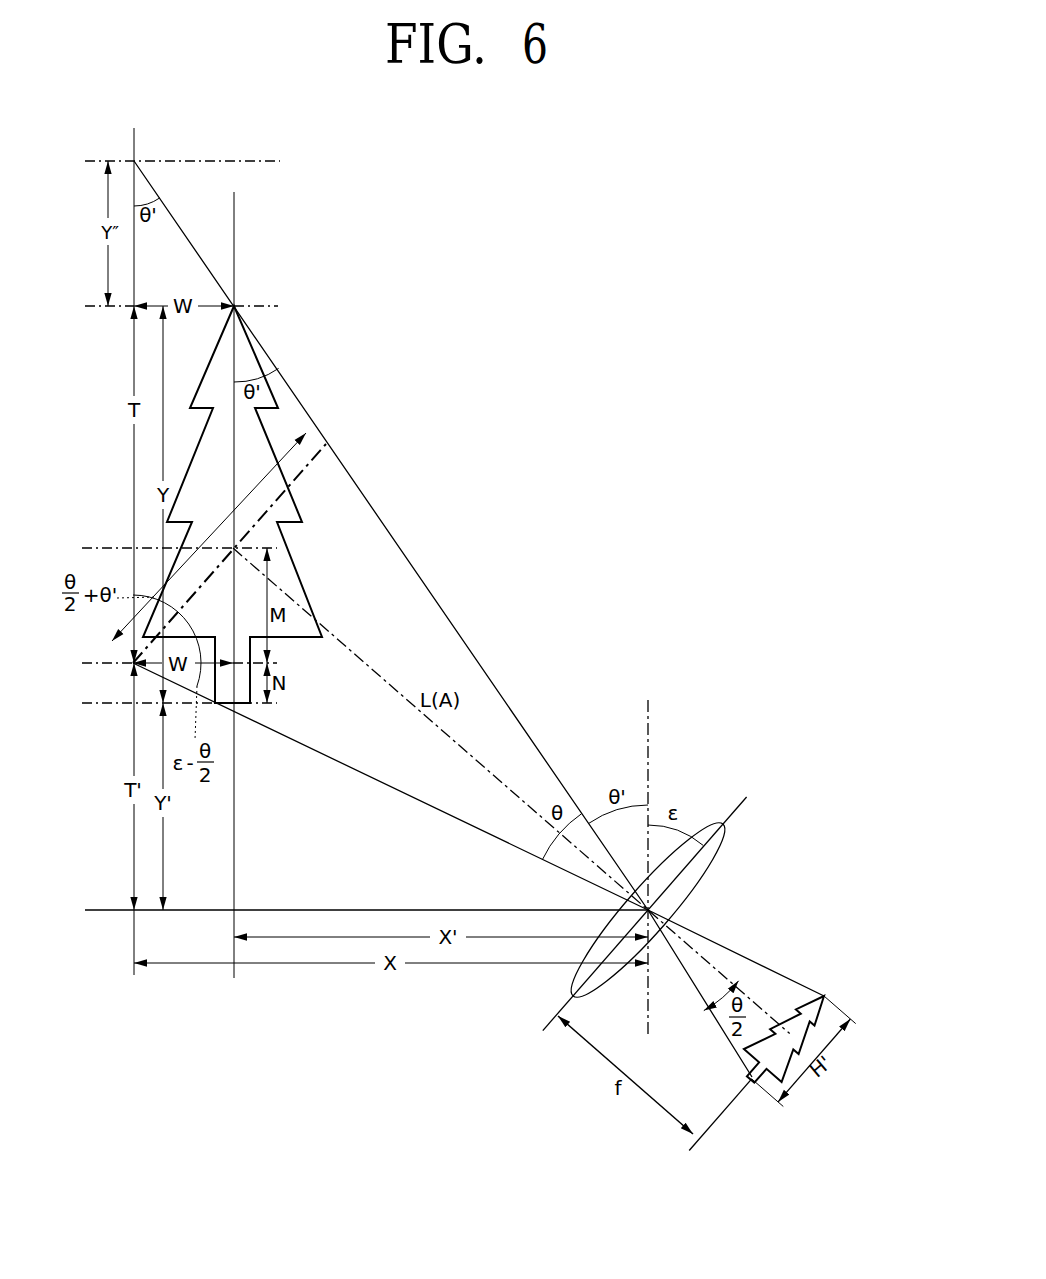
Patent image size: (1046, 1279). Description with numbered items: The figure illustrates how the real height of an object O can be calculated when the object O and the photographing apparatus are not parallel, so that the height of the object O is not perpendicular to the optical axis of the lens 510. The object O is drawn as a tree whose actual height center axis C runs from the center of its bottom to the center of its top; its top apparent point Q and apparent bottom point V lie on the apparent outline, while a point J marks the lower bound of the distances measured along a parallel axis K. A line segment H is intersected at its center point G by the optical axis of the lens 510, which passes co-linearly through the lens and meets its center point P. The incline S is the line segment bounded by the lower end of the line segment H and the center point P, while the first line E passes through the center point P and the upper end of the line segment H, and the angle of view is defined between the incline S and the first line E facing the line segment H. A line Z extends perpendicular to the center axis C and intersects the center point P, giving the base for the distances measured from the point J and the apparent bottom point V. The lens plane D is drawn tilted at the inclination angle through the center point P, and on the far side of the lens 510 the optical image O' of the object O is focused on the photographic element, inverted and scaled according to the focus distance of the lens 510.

The lens 510 is at (720, 872).
The axis K is at (182, 206).
The center axis C is at (236, 242).
The center point P is at (650, 908).
The top apparent point Q is at (236, 304).
The line segment H is at (233, 548).
The point J is at (128, 666).
The line Z is at (100, 908).
The object O is at (233, 504).
The first line E is at (410, 548).
The incline S is at (478, 829).
The center point G is at (236, 546).
The apparent bottom point V is at (216, 704).
The lens plane D is at (744, 800).
The optical image O' is at (805, 1024).